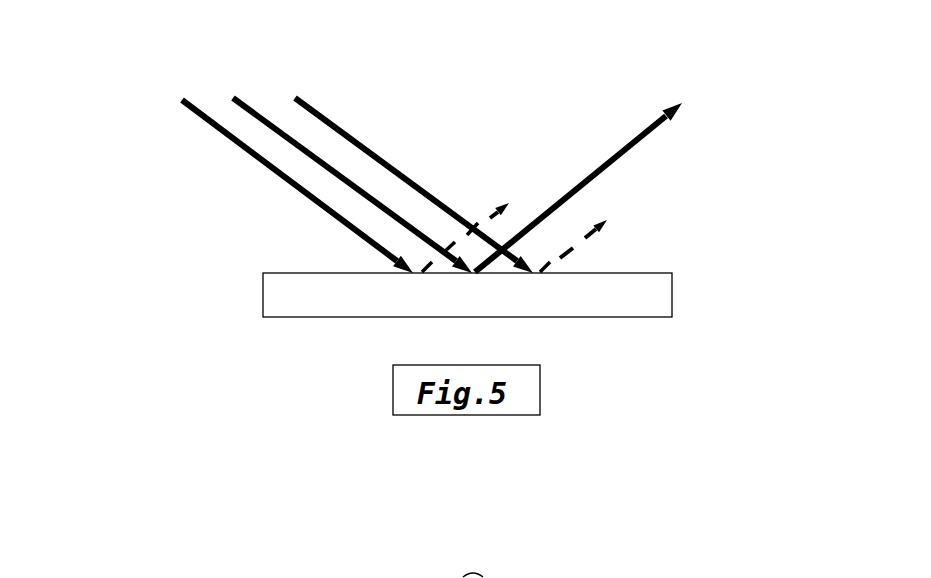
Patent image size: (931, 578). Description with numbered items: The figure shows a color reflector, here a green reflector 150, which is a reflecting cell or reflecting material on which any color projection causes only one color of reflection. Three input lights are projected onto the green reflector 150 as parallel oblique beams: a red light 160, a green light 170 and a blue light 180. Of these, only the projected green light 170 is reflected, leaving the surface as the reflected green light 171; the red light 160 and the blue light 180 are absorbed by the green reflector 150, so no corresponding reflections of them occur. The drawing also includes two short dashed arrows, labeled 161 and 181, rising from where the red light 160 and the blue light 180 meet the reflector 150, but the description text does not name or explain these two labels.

The green reflector 150 is at (614, 329).
The red light 160 is at (181, 118).
The first transmitted/refracted light beam 161 is at (508, 184).
The green light 170 is at (251, 89).
The reflected green light 171 is at (634, 128).
The blue light 180 is at (328, 92).
The third transmitted/refracted light beam 181 is at (613, 212).